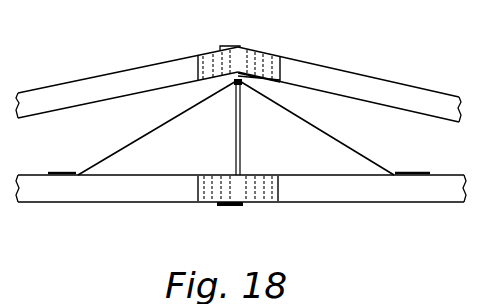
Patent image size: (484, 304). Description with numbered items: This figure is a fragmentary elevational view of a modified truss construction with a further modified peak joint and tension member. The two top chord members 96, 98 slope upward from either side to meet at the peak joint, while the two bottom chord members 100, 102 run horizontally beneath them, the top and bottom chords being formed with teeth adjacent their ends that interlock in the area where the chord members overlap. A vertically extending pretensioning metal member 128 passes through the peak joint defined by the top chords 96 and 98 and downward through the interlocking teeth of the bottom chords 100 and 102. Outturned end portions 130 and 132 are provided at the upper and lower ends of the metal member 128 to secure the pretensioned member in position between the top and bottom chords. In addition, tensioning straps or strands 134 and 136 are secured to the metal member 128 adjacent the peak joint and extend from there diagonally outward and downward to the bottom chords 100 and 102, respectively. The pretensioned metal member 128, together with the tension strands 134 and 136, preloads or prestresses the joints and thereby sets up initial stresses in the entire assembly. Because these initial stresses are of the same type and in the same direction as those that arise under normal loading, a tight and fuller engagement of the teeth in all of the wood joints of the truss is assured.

The top chord member 96 is at (115, 78).
The top chord member 98 is at (355, 78).
The bottom chord member 100 is at (133, 185).
The bottom chord member 102 is at (344, 193).
The pretensioning metal member 128 is at (241, 143).
The outturned end portion 130 is at (227, 46).
The outturned end portion 132 is at (230, 206).
The tensioning strap or strand 134 is at (157, 128).
The tensioning strap or strand 136 is at (314, 125).